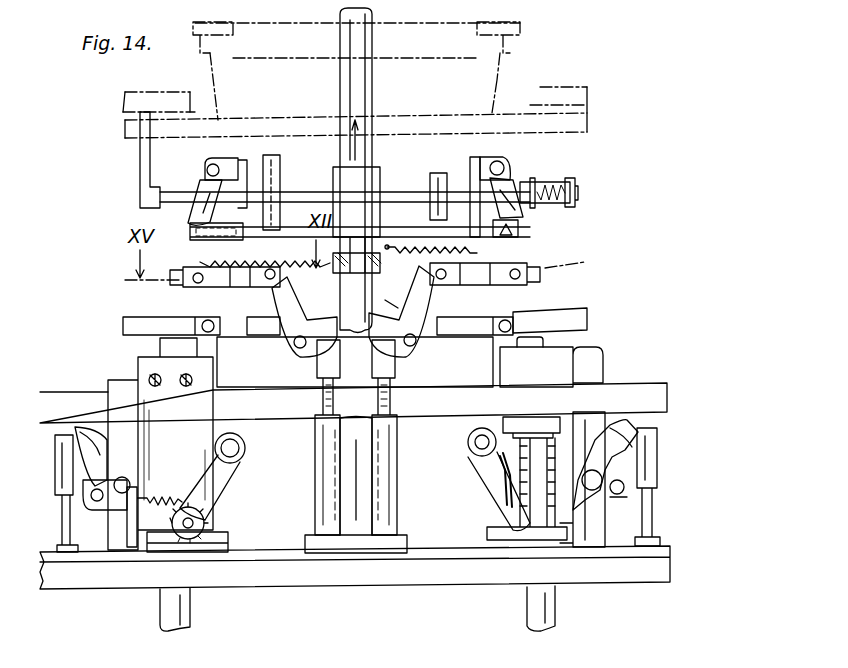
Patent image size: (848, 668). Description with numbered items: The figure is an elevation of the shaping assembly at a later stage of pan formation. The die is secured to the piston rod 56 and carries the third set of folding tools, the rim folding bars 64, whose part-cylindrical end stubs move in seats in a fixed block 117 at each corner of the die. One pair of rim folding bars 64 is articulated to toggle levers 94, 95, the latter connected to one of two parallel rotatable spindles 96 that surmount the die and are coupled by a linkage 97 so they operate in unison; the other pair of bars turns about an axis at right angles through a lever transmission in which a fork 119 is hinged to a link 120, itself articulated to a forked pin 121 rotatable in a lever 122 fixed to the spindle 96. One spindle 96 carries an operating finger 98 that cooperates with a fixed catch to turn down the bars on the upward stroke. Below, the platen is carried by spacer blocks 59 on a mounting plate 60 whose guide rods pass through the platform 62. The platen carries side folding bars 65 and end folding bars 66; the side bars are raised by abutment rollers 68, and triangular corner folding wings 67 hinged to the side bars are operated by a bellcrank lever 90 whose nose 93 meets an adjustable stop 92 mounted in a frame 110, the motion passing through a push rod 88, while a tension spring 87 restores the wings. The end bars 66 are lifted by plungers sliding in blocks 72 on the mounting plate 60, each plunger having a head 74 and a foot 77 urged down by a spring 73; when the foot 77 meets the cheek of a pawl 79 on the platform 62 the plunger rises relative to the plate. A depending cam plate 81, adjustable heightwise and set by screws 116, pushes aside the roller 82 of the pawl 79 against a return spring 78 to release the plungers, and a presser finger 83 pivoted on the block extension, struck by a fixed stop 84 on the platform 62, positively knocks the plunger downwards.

The piston rod 56 is at (362, 46).
The operating finger 98 is at (141, 158).
The rim folding bar 64 is at (290, 232).
The fixed block 117 is at (197, 236).
The toggle lever 95 is at (244, 162).
The toggle lever 94 is at (198, 183).
The linkage 97 is at (272, 158).
The abutment roller 68 is at (375, 238).
The rotatable spindle 96 is at (398, 205).
The lever 122 is at (470, 165).
The forked pin 121 is at (499, 160).
The link 120 is at (516, 180).
The fork 119 is at (525, 221).
The tension spring 87 is at (452, 251).
The push rod 88 is at (235, 272).
The corner folding wing 67 is at (215, 290).
The bellcrank lever 90 is at (290, 292).
The nose 93 is at (380, 322).
The side folding bar 65 is at (230, 338).
The end folding bar 66 is at (556, 318).
The spacer block 59 is at (300, 377).
The stop 92 is at (395, 366).
The mounting plate 60 is at (610, 396).
The cam plate 81 is at (160, 444).
The screw 116 is at (162, 392).
The block 72 is at (551, 367).
The head 74 is at (555, 345).
The fixed stop 84 is at (66, 500).
The presser finger 83 is at (90, 427).
The return spring 78 is at (175, 506).
The roller 82 is at (245, 453).
The pawl 79 is at (225, 490).
The spring 73 is at (500, 460).
The foot 77 is at (510, 540).
The frame 110 is at (343, 555).
The platform 62 is at (250, 578).